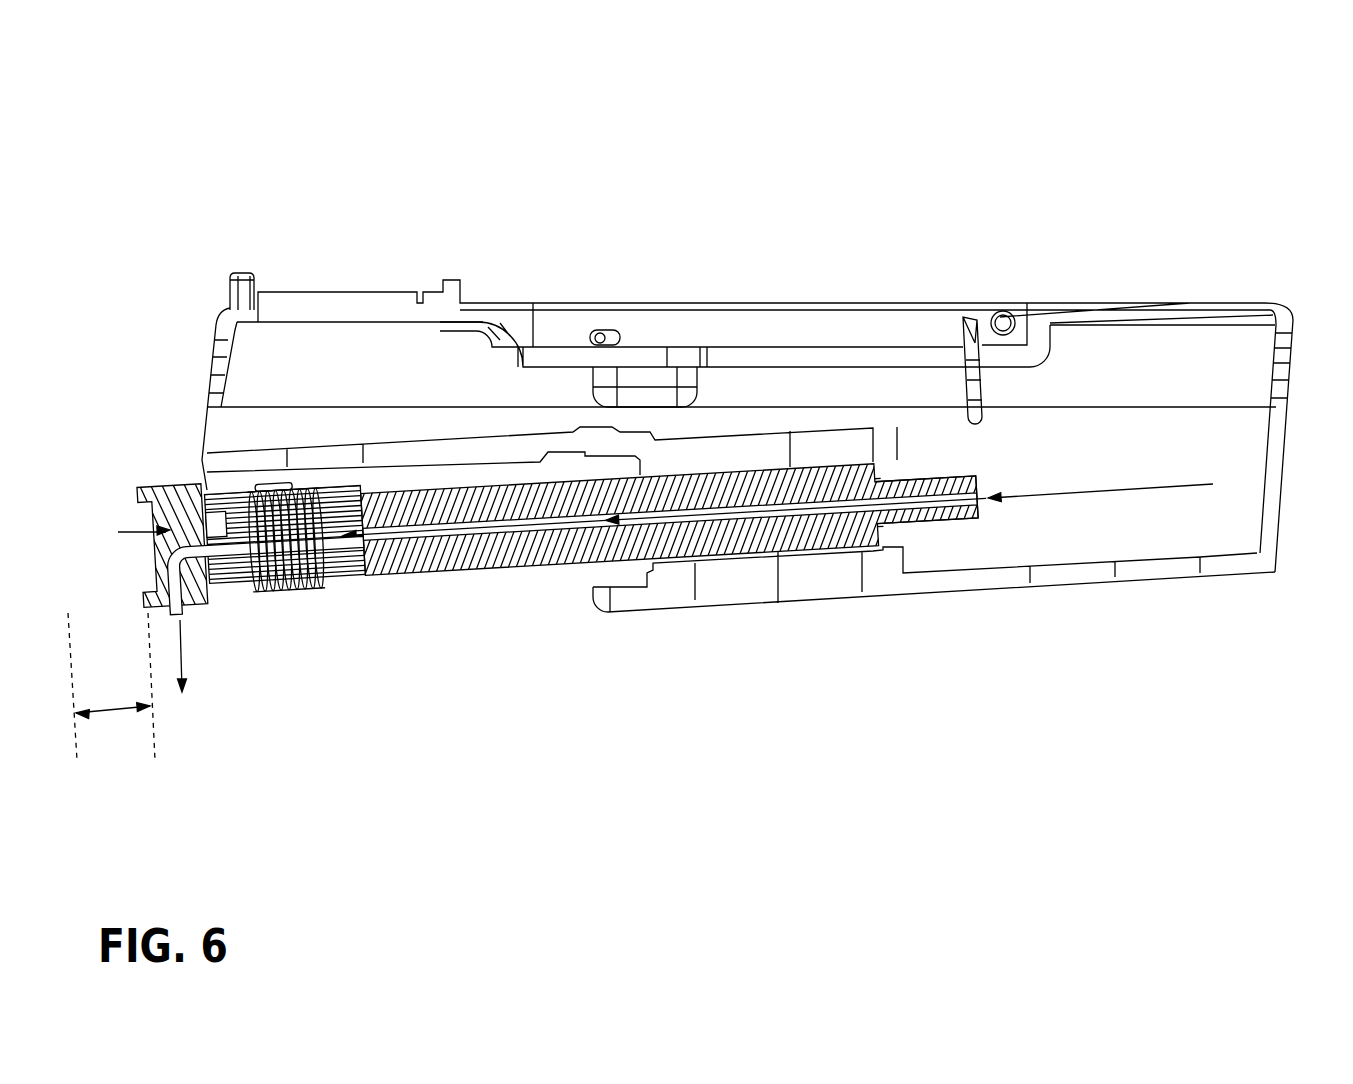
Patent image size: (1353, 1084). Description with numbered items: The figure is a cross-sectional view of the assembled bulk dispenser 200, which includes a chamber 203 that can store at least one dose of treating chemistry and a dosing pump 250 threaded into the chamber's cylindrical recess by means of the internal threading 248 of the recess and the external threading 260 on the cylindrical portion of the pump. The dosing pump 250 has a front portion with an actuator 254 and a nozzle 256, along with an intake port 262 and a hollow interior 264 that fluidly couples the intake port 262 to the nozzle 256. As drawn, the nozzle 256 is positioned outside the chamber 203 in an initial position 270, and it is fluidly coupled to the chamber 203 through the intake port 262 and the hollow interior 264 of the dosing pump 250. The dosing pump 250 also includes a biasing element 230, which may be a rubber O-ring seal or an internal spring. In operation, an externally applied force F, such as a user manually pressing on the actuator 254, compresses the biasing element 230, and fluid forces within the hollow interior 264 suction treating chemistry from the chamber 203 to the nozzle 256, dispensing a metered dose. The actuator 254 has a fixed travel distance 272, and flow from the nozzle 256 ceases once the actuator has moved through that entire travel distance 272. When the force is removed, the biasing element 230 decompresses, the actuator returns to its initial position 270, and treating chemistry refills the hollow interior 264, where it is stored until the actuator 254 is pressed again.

The bulk dispenser 200 is at (265, 130).
The chamber 203 is at (1250, 447).
The biasing element 230 is at (263, 573).
The internal threading 248 is at (277, 487).
The dosing pump 250 is at (169, 468).
The actuator 254 is at (158, 538).
The nozzle 256 is at (193, 617).
The external threading 260 is at (368, 624).
The intake port 262 is at (980, 483).
The hollow interior 264 is at (520, 535).
The initial position 270 is at (78, 752).
The travel distance 272 is at (108, 707).